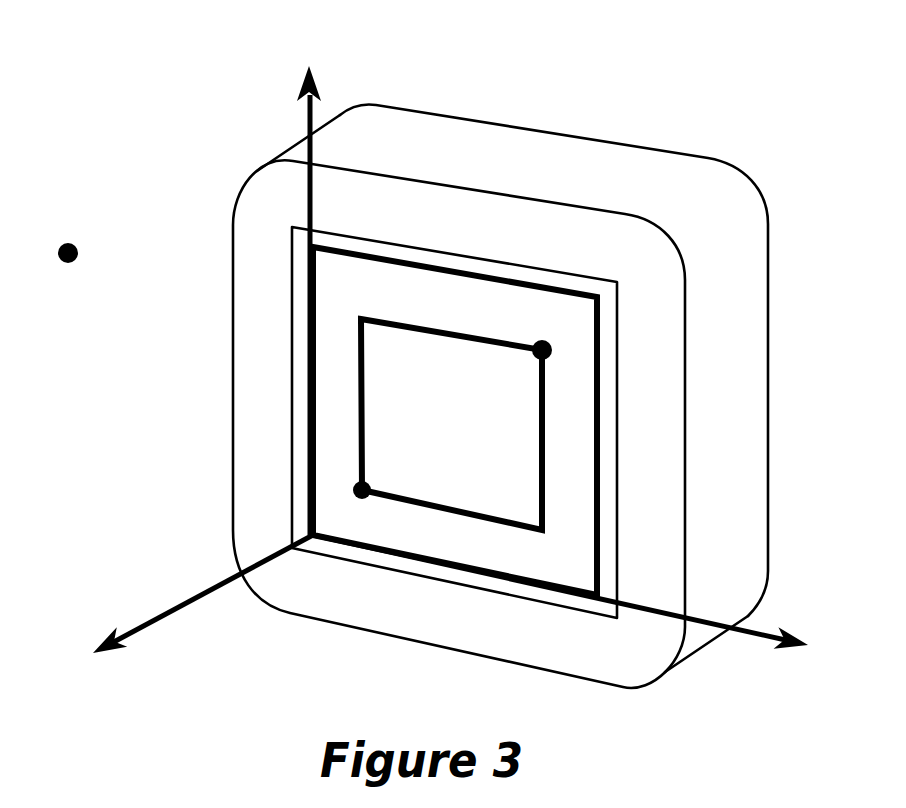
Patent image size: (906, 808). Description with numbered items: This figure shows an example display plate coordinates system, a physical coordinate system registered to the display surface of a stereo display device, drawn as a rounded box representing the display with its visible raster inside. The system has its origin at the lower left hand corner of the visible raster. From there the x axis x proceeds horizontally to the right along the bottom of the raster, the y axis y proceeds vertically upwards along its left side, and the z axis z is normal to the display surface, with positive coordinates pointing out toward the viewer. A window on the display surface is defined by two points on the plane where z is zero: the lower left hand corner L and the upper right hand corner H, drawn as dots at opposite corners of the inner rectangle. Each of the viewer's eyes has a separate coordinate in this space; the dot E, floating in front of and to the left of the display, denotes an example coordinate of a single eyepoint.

The eyepoint E is at (55, 241).
The upper right hand corner point H is at (551, 365).
The lower left hand corner point L is at (369, 478).
The x axis x is at (570, 598).
The y axis y is at (309, 284).
The z axis z is at (191, 603).